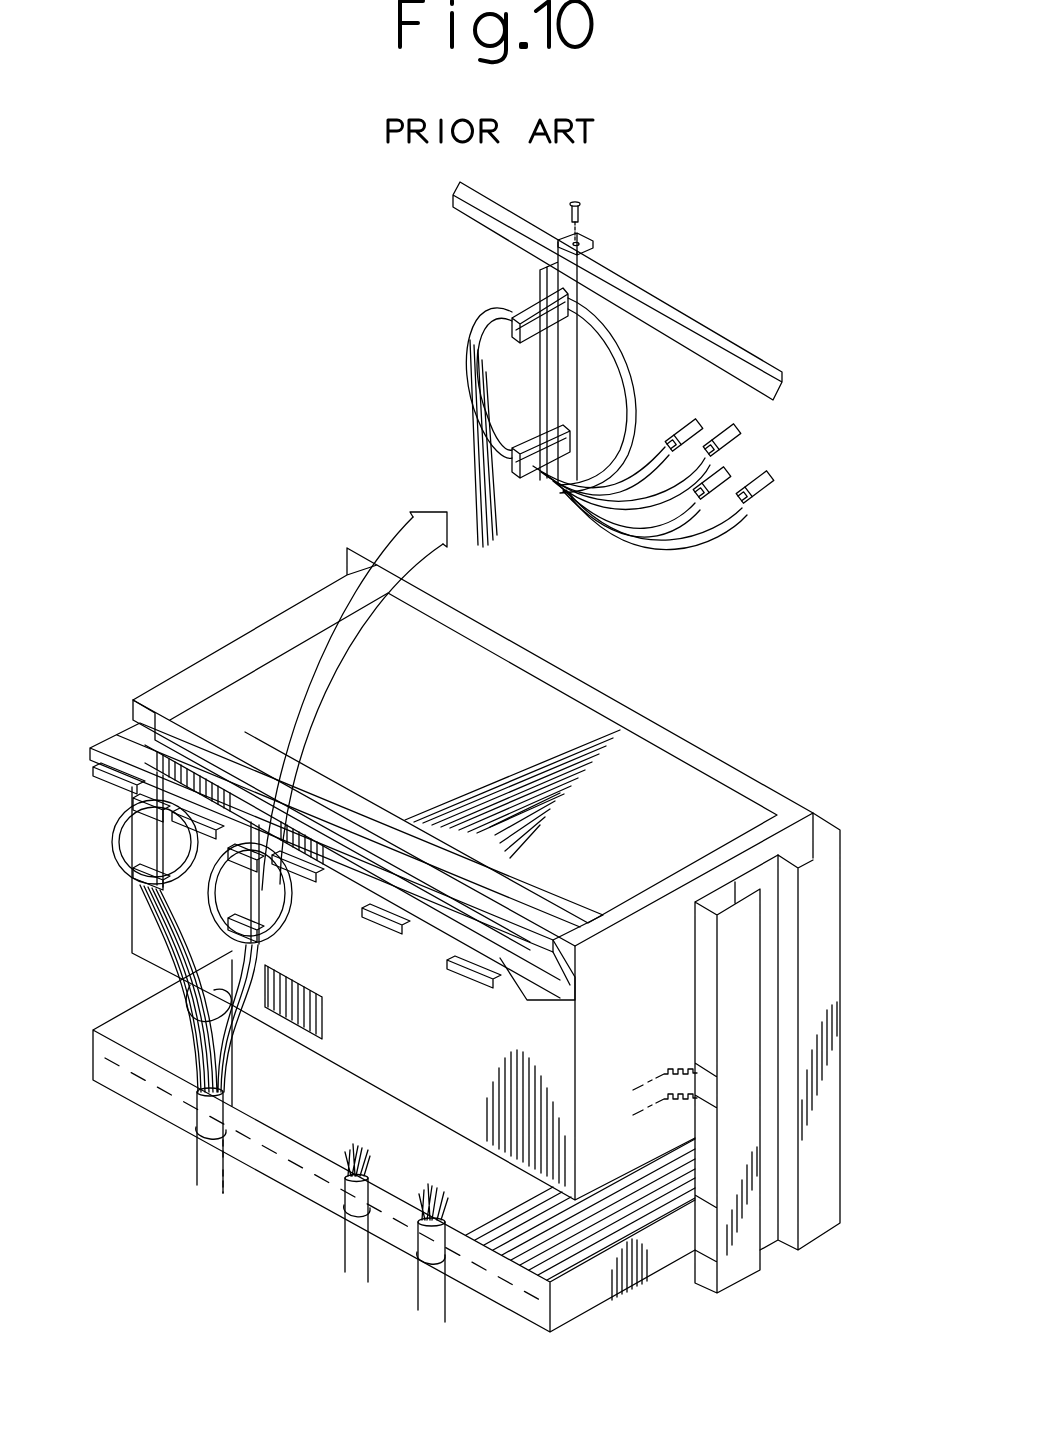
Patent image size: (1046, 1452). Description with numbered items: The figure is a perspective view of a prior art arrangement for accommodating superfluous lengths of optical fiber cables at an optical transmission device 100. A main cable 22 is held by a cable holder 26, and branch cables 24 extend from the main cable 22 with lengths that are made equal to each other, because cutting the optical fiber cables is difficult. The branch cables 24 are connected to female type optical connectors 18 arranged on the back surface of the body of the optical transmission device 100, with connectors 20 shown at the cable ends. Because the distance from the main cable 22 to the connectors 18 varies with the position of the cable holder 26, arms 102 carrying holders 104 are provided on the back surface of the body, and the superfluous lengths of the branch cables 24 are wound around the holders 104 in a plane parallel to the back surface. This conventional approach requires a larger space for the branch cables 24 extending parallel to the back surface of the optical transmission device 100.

The female type optical connectors 18 is at (130, 712).
The connector 20 is at (766, 482).
The main cable 22 is at (194, 1160).
The branch cables 24 is at (190, 1040).
The cable holder 26 is at (287, 1190).
The optical transmission device 100 is at (253, 629).
The arms 102 is at (542, 366).
The holders 104 is at (531, 479).